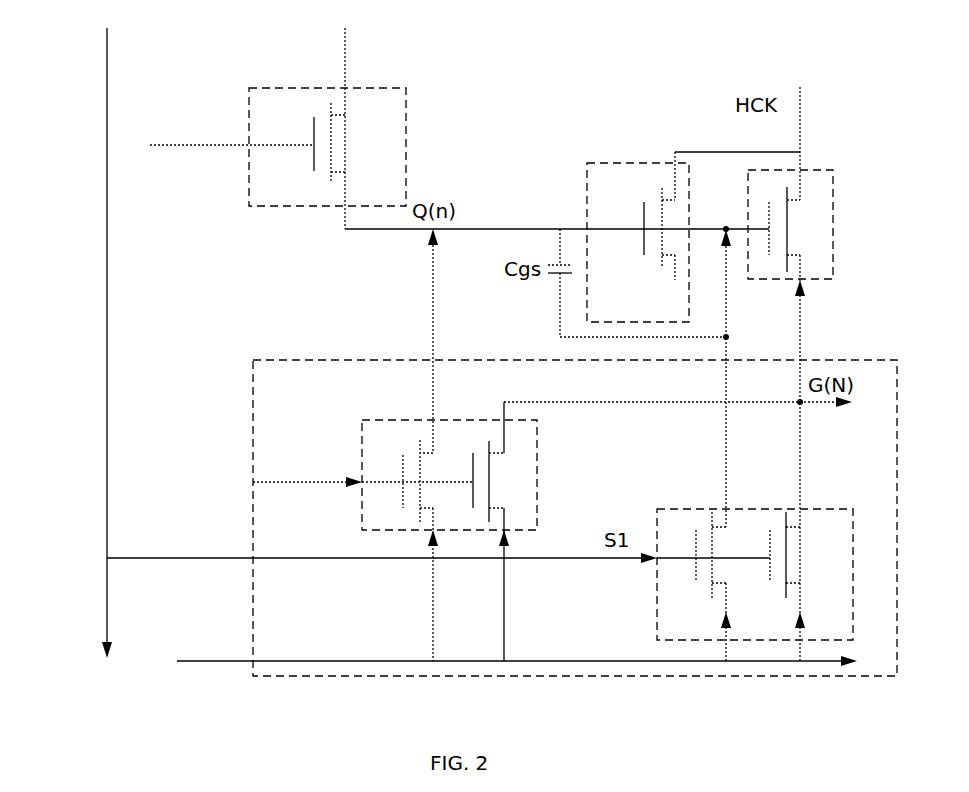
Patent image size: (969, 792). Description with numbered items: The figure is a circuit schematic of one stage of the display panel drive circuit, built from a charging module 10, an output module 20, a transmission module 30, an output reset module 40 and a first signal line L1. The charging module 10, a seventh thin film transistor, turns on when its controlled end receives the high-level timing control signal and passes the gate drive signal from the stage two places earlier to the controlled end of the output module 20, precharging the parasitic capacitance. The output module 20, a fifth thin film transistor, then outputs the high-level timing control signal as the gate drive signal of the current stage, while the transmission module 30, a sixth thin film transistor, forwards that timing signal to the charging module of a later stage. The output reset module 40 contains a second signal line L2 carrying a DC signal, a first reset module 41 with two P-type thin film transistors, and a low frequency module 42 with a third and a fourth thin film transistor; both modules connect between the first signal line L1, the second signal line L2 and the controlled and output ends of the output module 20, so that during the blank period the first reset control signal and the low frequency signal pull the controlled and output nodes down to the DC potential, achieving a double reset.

The charging module 10 is at (353, 88).
The output module 20 is at (818, 170).
The transmission module 30 is at (636, 163).
The output reset module 40 is at (345, 360).
The first reset module 41 is at (830, 509).
The low frequency module 42 is at (537, 455).
The first signal line L1 is at (118, 36).
The second signal line L2 is at (548, 661).